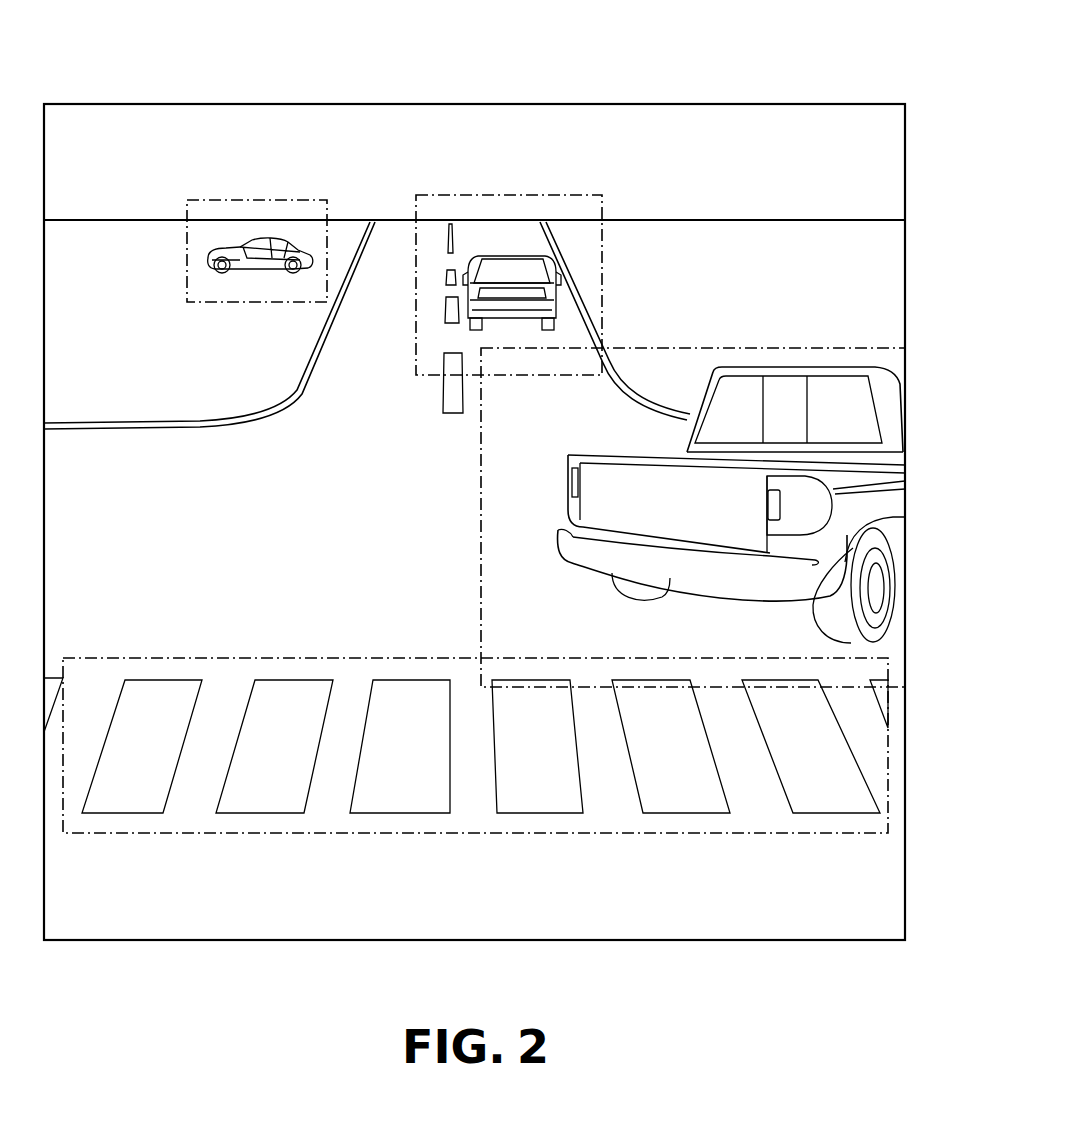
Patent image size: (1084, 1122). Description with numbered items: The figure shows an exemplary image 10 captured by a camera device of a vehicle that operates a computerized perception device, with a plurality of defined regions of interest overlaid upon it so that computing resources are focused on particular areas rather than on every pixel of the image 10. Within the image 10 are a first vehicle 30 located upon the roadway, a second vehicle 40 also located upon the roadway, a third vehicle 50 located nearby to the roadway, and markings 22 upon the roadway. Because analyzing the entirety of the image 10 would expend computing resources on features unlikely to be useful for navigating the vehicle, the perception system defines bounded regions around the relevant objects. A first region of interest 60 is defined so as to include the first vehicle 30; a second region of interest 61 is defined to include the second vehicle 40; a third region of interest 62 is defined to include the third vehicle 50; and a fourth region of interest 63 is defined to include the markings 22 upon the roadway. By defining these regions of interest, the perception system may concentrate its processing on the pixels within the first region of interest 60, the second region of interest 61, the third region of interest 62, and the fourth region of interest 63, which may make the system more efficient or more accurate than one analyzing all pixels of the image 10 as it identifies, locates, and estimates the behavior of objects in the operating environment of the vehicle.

The image 10 is at (613, 104).
The markings 22 is at (697, 813).
The first vehicle 30 is at (822, 468).
The second vehicle 40 is at (502, 253).
The third vehicle 50 is at (225, 250).
The first region of interest 60 is at (823, 348).
The second region of interest 61 is at (578, 195).
The third region of interest 62 is at (303, 200).
The fourth region of interest 63 is at (890, 737).